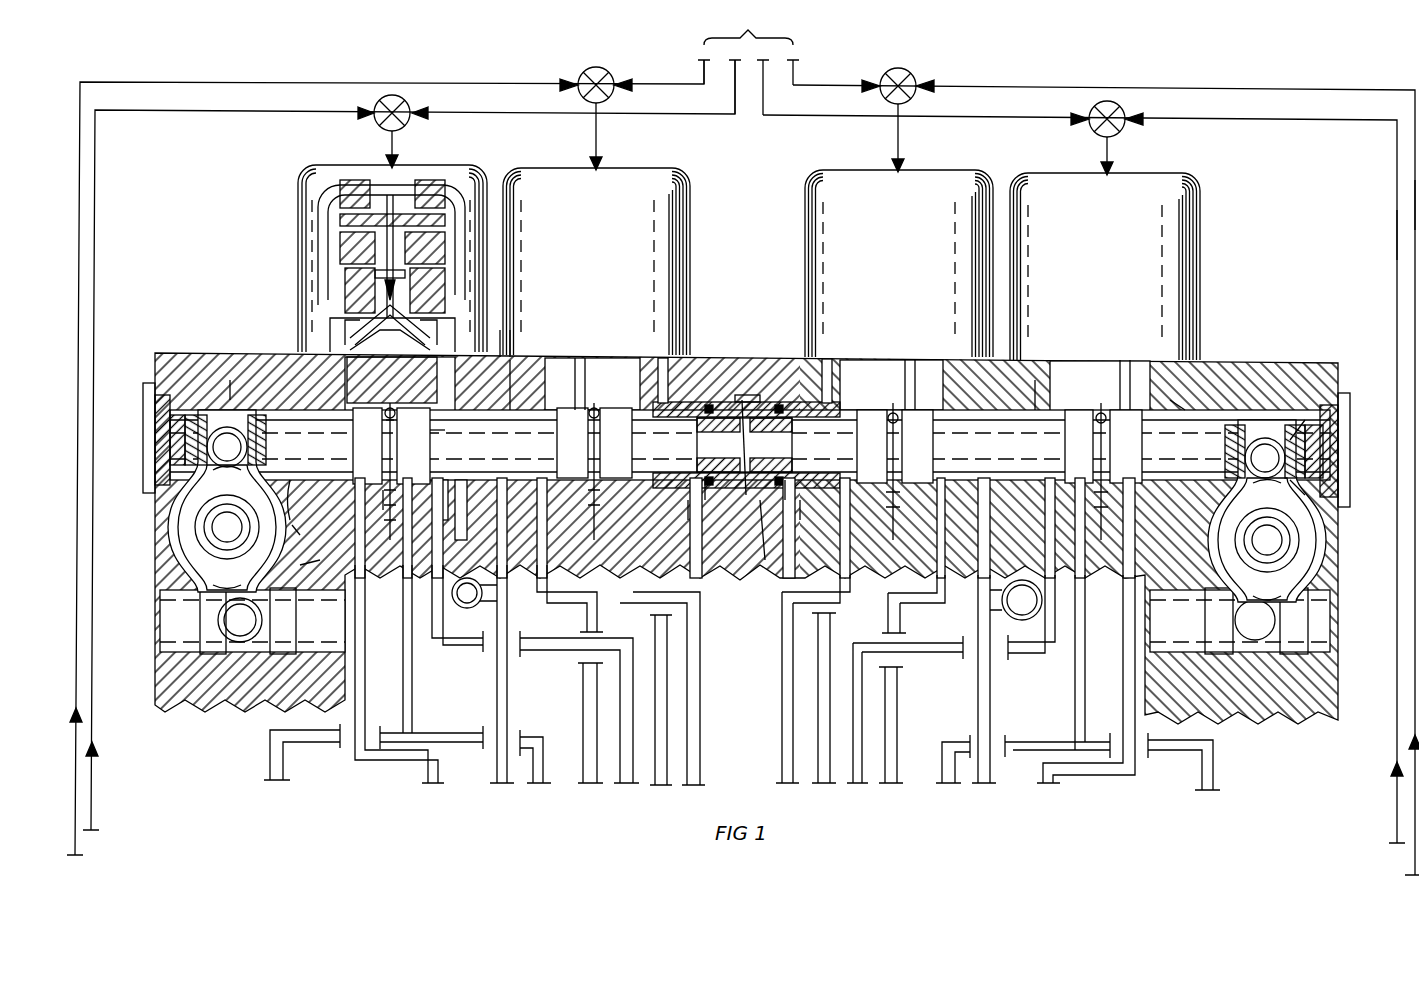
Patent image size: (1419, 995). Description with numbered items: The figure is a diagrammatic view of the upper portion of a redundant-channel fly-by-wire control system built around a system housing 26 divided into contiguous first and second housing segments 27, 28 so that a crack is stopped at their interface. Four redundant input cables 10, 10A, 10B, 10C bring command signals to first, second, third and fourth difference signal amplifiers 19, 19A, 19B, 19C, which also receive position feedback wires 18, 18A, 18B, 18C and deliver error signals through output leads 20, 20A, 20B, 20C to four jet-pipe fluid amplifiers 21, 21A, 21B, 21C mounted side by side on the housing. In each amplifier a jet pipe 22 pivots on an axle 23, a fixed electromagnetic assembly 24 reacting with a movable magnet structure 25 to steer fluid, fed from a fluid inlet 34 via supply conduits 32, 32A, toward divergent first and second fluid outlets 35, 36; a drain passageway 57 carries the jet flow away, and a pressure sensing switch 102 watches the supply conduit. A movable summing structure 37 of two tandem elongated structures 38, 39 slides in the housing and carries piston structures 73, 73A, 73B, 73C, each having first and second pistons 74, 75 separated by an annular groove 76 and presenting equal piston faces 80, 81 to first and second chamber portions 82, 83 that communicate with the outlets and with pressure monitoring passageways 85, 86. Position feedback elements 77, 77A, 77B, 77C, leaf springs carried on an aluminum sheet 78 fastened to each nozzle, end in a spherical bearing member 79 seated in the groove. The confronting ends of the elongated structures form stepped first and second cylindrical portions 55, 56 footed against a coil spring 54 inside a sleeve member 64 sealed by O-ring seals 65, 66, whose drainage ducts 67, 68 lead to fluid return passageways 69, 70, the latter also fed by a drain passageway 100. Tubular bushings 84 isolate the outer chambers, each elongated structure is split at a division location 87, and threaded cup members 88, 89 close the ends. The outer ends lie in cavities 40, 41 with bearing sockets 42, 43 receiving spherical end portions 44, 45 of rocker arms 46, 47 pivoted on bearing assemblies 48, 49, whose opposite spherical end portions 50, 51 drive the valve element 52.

The input cable 10 is at (665, 84).
The input cable 10A is at (735, 118).
The input cable 10B is at (825, 86).
The input cable 10C is at (765, 118).
The position feedback wire 18 is at (95, 228).
The position feedback wire 18A is at (80, 195).
The position feedback wire 18B is at (1413, 203).
The position feedback wire 18C is at (1397, 237).
The difference signal amplifier 19 is at (392, 95).
The difference signal amplifier 19A is at (596, 67).
The difference signal amplifier 19B is at (898, 68).
The difference signal amplifier 19C is at (1107, 101).
The output lead 20 is at (402, 137).
The output lead 20A is at (602, 140).
The output lead 20B is at (904, 143).
The output lead 20C is at (1113, 143).
The fluid amplifier 21 is at (292, 170).
The fluid amplifier 21A is at (692, 246).
The fluid amplifier 21B is at (805, 276).
The fluid amplifier 21C is at (1200, 252).
The jet pipe 22 is at (345, 318).
The axle 23 is at (380, 218).
The fixed electromagnetic assembly 24 is at (330, 240).
The movable magnet structure 25 is at (440, 220).
The system housing 26 is at (148, 362).
The first housing segment 27 is at (760, 395).
The second housing segment 28 is at (735, 395).
The fluid supply conduit 32 is at (512, 690).
The fluid supply conduit 32A is at (672, 660).
The fluid inlet 34 is at (470, 330).
The first fluid outlet 35 is at (355, 345).
The second fluid outlet 36 is at (440, 310).
The movable structure 37 is at (540, 362).
The first elongated structure 38 is at (520, 575).
The second elongated structure 39 is at (1035, 405).
The cavity 40 is at (180, 520).
The cavity 41 is at (1305, 545).
The bearing socket 42 is at (225, 428).
The bearing socket 43 is at (1290, 430).
The spherical end portion 44 is at (240, 380).
The spherical end portion 45 is at (1265, 438).
The first rocker arm 46 is at (200, 490).
The second rocker arm 47 is at (1235, 548).
The bearing assembly 48 is at (210, 520).
The bearing assembly 49 is at (1240, 530).
The third spherical end portion 50 is at (238, 642).
The fourth spherical end portion 51 is at (1250, 645).
The valve element 52 is at (188, 612).
The coil spring 54 is at (788, 410).
The first cylindrical portion 55 is at (712, 408).
The second cylindrical portion 56 is at (750, 520).
The drain passageway 57 is at (445, 285).
The sleeve member 64 is at (730, 545).
The first O-ring seal 65 is at (700, 490).
The second O-ring seal 66 is at (778, 490).
The first drainage duct 67 is at (688, 512).
The second drainage duct 68 is at (795, 512).
The first fluid return passageway 69 is at (268, 760).
The second fluid return passageway 70 is at (940, 590).
The piston structure 73 is at (352, 488).
The piston structure 73A is at (612, 400).
The piston structure 73B is at (875, 405).
The piston structure 73C is at (1075, 400).
The first piston 74 is at (328, 558).
The second piston 75 is at (455, 500).
The annular groove 76 is at (385, 575).
The position feedback element 77 is at (400, 397).
The position feedback element 77A is at (588, 360).
The position feedback element 77B is at (908, 365).
The position feedback element 77C is at (1112, 375).
The sheet 78 is at (372, 275).
The spherical bearing member 79 is at (384, 416).
The first piston face 80 is at (340, 403).
The second piston face 81 is at (410, 425).
The first chamber portion 82 is at (290, 488).
The second chamber portion 83 is at (448, 484).
The tubular bushing 84 is at (292, 512).
The first pressure monitoring passageway 85 is at (372, 630).
The second pressure monitoring passageway 86 is at (452, 650).
The division location 87 is at (510, 405).
The cup member 88 is at (148, 440).
The cup member 89 is at (1346, 455).
The drain passageway 100 is at (547, 748).
The pressure sensing switch 102 is at (487, 610).